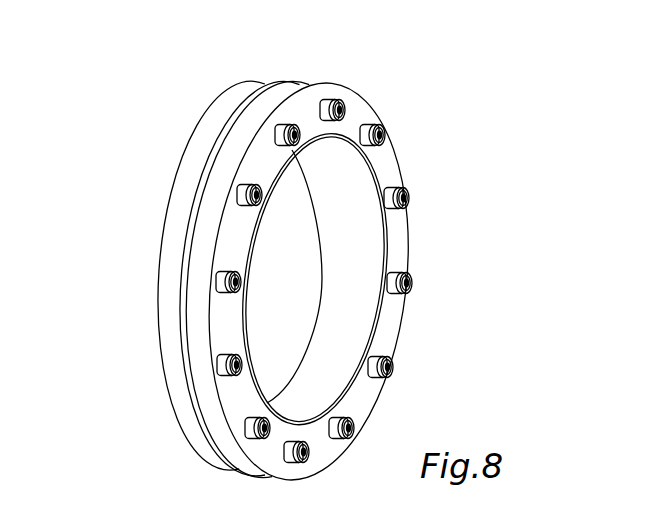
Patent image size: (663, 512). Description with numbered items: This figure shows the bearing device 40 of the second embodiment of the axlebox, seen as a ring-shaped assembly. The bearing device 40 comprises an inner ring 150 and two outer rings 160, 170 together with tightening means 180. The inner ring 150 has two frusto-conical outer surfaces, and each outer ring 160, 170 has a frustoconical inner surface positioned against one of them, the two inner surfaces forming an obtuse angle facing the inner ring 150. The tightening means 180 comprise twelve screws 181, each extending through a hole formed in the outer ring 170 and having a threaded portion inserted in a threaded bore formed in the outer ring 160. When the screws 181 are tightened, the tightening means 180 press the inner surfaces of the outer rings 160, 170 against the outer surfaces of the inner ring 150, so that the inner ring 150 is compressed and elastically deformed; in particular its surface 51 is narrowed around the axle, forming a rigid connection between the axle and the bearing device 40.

The bearing device 40 is at (163, 161).
The surface of ring 51 is at (356, 317).
The inner ring 150 is at (355, 240).
The outer ring 160 is at (233, 110).
The outer ring 170 is at (313, 93).
The tightening means 180 is at (364, 261).
The screw 181 is at (380, 137).